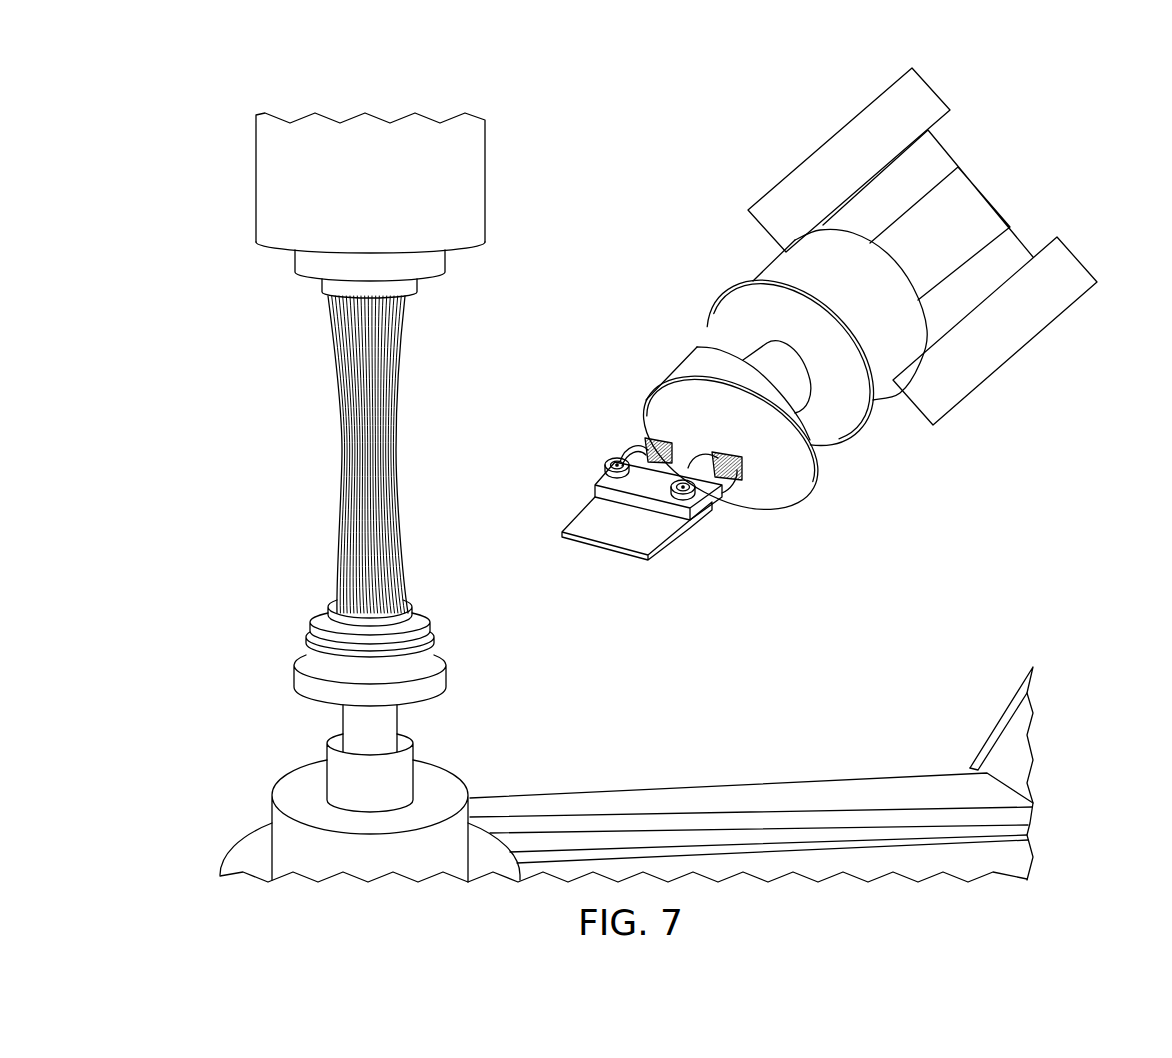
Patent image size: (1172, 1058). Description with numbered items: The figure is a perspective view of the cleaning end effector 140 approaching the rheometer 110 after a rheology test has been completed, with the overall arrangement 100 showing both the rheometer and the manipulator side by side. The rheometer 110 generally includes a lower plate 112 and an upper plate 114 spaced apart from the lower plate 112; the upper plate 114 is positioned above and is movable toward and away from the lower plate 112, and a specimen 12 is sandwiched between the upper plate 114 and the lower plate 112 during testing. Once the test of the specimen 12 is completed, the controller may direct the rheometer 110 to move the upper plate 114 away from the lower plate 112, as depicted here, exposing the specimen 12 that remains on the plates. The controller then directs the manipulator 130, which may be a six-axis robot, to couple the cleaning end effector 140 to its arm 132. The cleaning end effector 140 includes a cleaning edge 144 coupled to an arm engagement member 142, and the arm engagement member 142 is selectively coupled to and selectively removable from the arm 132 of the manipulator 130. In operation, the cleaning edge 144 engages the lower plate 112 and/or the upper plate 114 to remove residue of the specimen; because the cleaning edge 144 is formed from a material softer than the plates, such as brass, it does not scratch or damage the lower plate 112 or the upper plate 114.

The system 100 is at (134, 129).
The rheometer 110 is at (225, 207).
The upper plate 114 is at (443, 266).
The specimen 12 is at (319, 462).
The lower plate 112 is at (306, 650).
The manipulator 130 is at (1047, 163).
The arm 132 is at (774, 137).
The arm engagement member 142 is at (714, 279).
The cleaning end effector 140 is at (851, 484).
The cleaning edge 144 is at (650, 579).